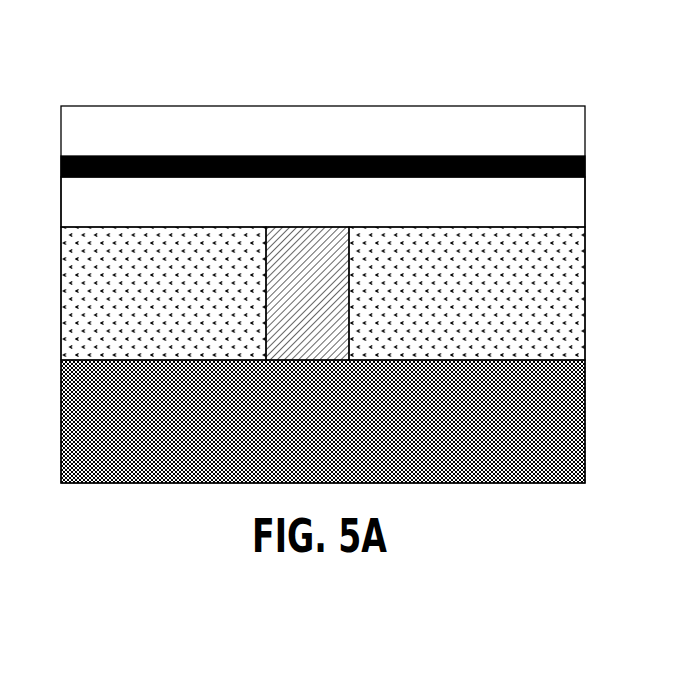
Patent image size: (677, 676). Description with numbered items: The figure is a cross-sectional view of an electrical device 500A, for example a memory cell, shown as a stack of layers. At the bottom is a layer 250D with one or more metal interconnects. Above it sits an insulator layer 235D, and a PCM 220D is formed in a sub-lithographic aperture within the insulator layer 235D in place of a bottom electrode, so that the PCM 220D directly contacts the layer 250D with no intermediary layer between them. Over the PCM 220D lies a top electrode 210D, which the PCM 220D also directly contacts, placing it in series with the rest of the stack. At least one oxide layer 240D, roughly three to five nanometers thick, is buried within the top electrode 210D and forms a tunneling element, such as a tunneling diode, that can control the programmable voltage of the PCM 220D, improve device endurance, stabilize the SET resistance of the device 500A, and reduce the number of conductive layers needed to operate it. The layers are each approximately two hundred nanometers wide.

The electrical device 500A is at (368, 269).
The oxide layer 240D is at (587, 167).
The top electrode 210D is at (323, 202).
The PCM 220D is at (307, 293).
The insulator layer 235D is at (323, 293).
The layer with one or more metal interconnects 250D is at (323, 421).